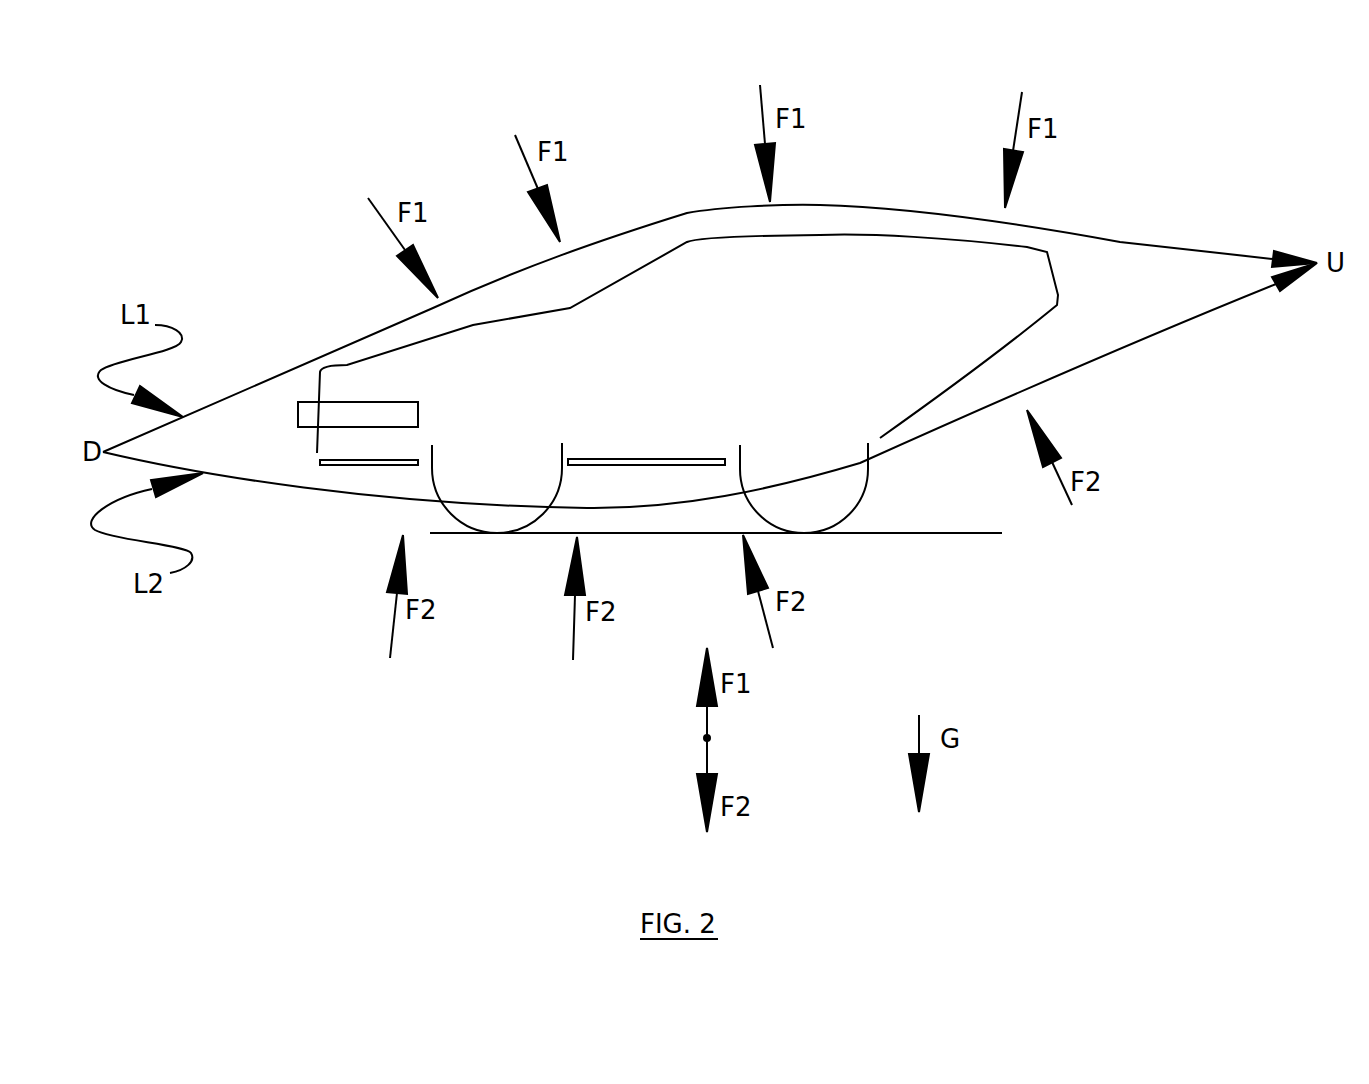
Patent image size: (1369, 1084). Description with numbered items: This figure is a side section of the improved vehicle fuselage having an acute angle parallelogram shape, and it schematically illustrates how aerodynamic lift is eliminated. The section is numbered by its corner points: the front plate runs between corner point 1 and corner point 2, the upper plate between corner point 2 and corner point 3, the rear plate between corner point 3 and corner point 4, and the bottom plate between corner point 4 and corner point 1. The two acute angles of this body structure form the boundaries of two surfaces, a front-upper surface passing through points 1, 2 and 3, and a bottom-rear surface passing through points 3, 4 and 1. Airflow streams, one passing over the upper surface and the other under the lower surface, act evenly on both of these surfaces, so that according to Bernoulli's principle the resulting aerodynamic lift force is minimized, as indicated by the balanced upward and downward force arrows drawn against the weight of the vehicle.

The fuselage corner point 1 is at (358, 433).
The fuselage corner point 2 is at (568, 344).
The fuselage corner point 3 is at (939, 336).
The fuselage corner point 4 is at (804, 486).